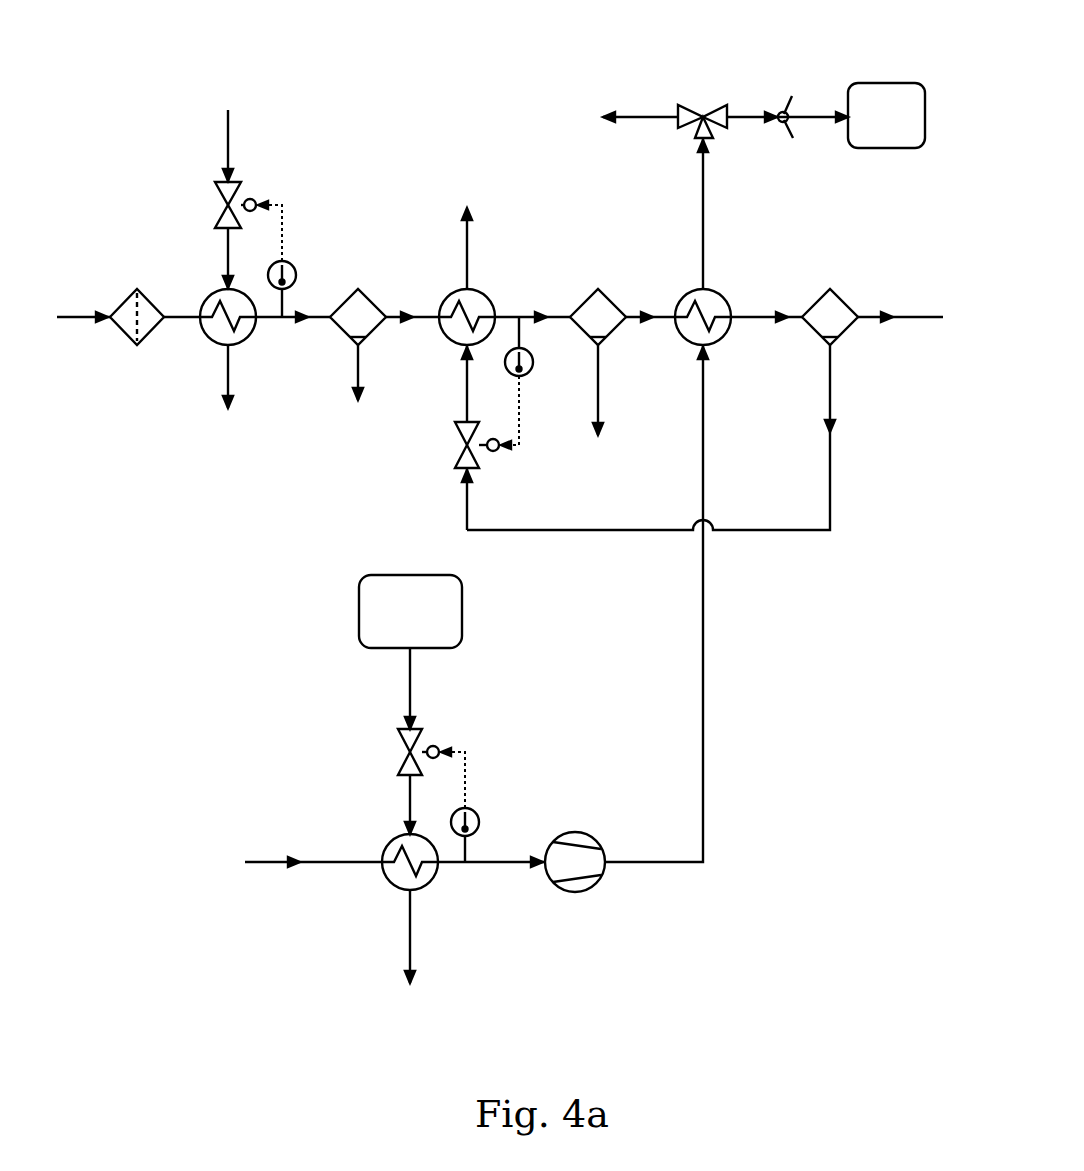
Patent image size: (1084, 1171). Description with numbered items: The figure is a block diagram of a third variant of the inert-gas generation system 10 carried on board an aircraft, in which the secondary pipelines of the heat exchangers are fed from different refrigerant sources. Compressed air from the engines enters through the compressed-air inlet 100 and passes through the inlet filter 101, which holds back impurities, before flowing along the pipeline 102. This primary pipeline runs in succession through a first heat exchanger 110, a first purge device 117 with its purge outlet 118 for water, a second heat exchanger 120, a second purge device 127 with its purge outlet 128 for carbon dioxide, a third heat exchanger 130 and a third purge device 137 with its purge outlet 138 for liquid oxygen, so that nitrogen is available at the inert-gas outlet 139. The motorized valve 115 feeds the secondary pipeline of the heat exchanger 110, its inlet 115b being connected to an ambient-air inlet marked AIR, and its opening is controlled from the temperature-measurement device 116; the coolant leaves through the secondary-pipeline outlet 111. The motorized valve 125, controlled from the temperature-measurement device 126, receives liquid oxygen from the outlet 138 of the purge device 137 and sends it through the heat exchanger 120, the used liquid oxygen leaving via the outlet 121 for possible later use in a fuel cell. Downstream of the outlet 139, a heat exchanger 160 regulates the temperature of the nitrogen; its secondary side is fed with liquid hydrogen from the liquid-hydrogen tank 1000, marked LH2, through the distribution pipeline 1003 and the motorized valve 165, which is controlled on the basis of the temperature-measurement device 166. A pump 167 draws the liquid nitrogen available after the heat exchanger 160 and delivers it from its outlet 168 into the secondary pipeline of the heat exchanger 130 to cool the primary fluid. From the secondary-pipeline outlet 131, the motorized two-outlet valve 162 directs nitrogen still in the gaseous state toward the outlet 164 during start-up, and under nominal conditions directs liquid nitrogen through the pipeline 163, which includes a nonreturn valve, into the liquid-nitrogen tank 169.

The inert-gas generation system 10 is at (500, 40).
The compressed-air inlet 100 is at (83, 315).
The inlet filter 101 is at (125, 335).
The pipeline 102 is at (172, 315).
The first heat exchanger 110 is at (235, 338).
The secondary-pipeline outlet 111 is at (225, 378).
The motorized valve 115 is at (233, 185).
The inlet of the motorized valve 115b is at (228, 128).
The temperature-measurement device 116 is at (297, 270).
The first purge device 117 is at (345, 327).
The purge outlet 118 is at (357, 370).
The second heat exchanger 120 is at (443, 292).
The secondary-pipeline outlet 121 is at (470, 257).
The motorized valve 125 is at (460, 437).
The temperature-measurement device 126 is at (527, 363).
The second purge device 127 is at (613, 297).
The purge outlet 128 is at (602, 367).
The third heat exchanger 130 is at (710, 340).
The secondary-pipeline outlet 131 is at (705, 255).
The third purge device 137 is at (820, 333).
The purge outlet 138 is at (828, 398).
The inert-gas outlet 139 is at (883, 315).
The heat exchanger 160 is at (418, 885).
The two-outlet valve 162 is at (685, 102).
The pipeline 163 is at (748, 120).
The outlet 164 is at (637, 120).
The motorized valve 165 is at (422, 732).
The temperature-measurement device 166 is at (482, 817).
The pump 167 is at (562, 895).
The outlet of the pump 168 is at (707, 832).
The tank 169 is at (873, 82).
The liquid-hydrogen tank 1000 is at (458, 627).
The distribution pipeline 1003 is at (412, 688).